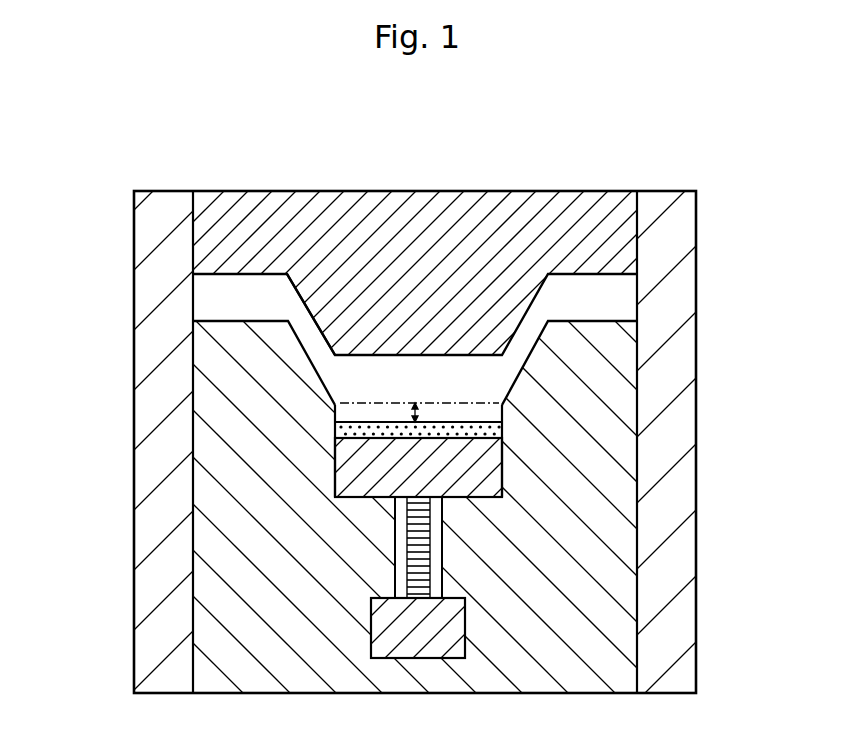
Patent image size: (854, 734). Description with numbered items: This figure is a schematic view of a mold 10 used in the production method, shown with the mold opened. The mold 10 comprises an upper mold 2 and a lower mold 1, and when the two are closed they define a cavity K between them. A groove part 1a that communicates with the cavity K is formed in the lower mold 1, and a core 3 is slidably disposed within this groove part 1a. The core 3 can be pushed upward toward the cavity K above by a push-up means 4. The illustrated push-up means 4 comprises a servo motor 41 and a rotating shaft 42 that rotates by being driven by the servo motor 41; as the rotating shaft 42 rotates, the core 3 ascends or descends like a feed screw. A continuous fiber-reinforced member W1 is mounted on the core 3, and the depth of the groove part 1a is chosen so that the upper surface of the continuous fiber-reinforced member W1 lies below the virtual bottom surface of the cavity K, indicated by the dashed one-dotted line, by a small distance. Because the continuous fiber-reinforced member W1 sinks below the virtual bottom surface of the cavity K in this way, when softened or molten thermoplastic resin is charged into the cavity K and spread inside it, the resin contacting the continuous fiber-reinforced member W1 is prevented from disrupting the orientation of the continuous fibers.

The mold 10 is at (430, 417).
The upper mold 2 is at (627, 232).
The lower mold 1 is at (626, 397).
The groove part 1a is at (335, 410).
The cavity K is at (313, 320).
The continuous fiber-reinforced member W1 is at (335, 433).
The core 3 is at (480, 470).
The push-up means 4 is at (582, 577).
The rotating shaft 42 is at (420, 553).
The servo motor 41 is at (468, 620).